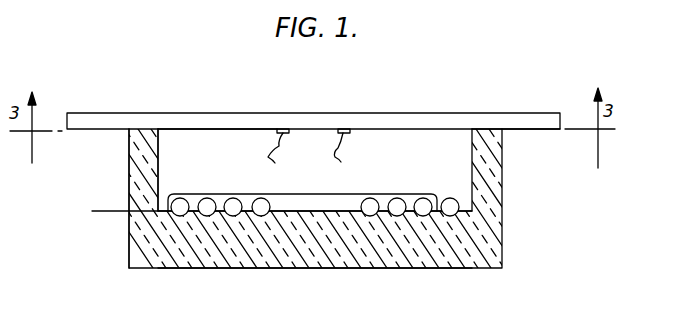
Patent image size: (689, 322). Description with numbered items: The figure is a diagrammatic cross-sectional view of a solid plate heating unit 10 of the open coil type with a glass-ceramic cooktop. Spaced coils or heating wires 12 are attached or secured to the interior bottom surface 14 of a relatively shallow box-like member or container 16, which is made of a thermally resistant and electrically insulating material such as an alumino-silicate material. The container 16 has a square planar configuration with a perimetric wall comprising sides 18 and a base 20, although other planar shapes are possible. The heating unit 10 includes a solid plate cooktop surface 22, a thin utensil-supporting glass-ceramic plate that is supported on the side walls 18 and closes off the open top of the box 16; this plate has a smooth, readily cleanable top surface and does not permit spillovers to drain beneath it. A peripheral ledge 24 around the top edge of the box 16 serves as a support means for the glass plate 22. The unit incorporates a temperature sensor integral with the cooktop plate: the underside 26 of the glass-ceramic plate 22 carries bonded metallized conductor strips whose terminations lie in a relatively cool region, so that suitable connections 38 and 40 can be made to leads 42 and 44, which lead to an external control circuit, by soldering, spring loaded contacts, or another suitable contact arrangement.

The solid plate heating unit 10 is at (313, 105).
The heating wires 12 is at (446, 173).
The interior bottom surface 14 is at (342, 197).
The box-like member or container 16 is at (338, 268).
The sides 18 is at (136, 155).
The base 20 is at (226, 257).
The solid plate cooktop surface 22 is at (497, 113).
The peripheral ledge 24 is at (521, 129).
The underside 26 is at (203, 131).
The connection 38 is at (278, 133).
The connection 40 is at (351, 133).
The lead 42 is at (282, 143).
The lead 44 is at (345, 150).